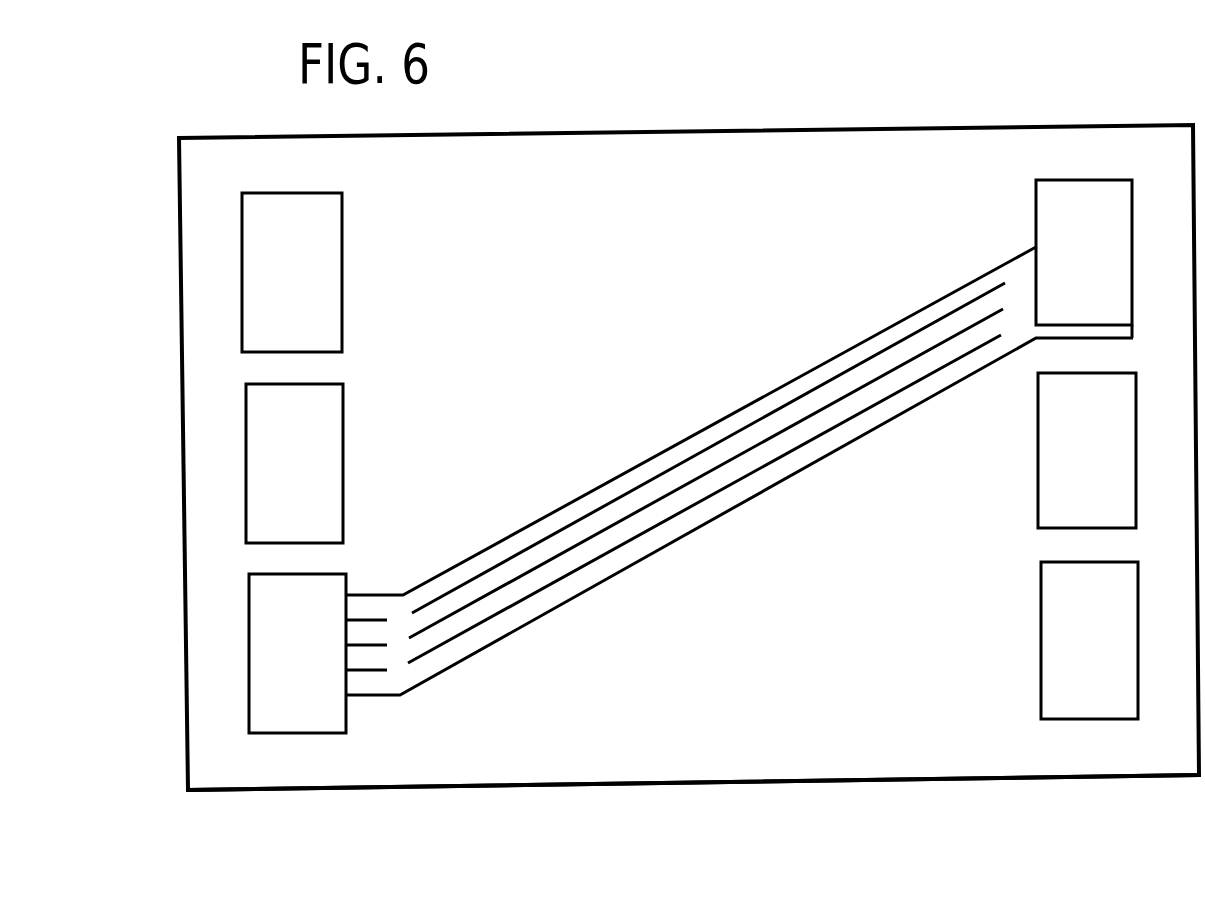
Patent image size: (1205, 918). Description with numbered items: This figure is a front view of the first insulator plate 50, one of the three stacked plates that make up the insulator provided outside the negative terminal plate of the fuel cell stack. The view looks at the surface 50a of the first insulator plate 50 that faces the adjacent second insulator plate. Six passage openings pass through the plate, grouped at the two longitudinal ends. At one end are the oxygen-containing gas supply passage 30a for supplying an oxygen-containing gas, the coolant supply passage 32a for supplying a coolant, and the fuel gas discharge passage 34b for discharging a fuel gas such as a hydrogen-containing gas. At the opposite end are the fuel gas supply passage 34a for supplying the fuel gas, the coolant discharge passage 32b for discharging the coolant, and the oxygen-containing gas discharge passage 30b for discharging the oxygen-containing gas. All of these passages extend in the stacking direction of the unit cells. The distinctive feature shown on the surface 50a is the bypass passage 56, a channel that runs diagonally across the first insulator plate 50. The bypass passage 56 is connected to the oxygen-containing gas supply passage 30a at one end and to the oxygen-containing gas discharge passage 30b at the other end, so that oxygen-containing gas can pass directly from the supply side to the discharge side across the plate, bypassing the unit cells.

The first insulator plate 50 is at (1048, 97).
The surface of the first insulator plate 50a is at (793, 767).
The bypass passage 56 is at (690, 468).
The oxygen-containing gas supply passage 30a is at (1084, 259).
The oxygen-containing gas discharge passage 30b is at (297, 653).
The coolant supply passage 32a is at (1087, 450).
The coolant discharge passage 32b is at (294, 463).
The fuel gas supply passage 34a is at (292, 272).
The fuel gas discharge passage 34b is at (1089, 640).